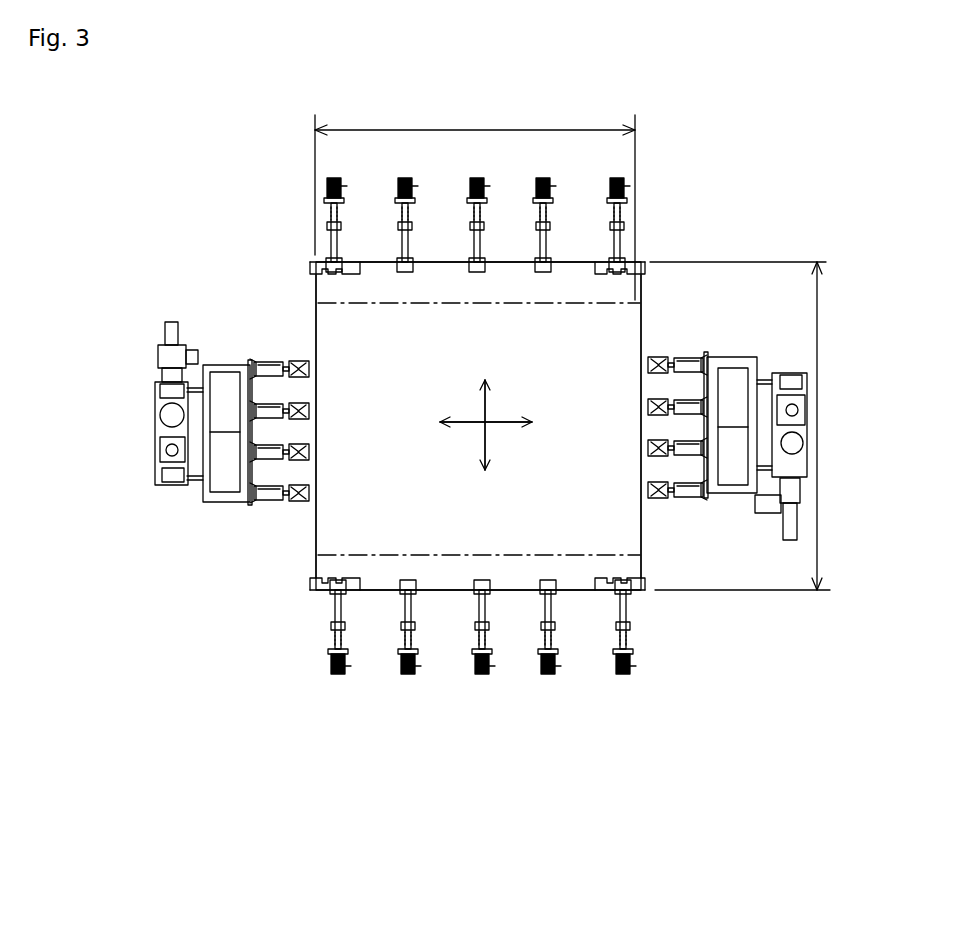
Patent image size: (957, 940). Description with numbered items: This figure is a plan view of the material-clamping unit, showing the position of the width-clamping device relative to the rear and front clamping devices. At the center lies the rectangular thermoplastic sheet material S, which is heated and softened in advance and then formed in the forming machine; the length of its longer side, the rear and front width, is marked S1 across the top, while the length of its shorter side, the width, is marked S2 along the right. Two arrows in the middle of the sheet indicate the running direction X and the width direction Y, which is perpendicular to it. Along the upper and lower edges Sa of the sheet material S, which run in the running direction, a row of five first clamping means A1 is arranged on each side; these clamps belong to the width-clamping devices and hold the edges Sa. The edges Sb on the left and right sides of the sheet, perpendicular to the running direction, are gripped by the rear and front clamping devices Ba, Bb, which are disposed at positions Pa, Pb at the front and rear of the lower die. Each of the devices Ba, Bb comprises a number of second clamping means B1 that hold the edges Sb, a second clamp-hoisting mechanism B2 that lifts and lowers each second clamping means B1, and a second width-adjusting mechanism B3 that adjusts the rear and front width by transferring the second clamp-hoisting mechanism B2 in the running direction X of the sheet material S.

The thermoplastic sheet material S is at (597, 502).
The edges of the sides of the sheet material Sa is at (568, 258).
The edges of the sides of the sheet material Sb is at (303, 281).
The length of the longer side S1 is at (475, 158).
The length of the shorter side S2 is at (817, 527).
The first clamping means A1 is at (385, 213).
The position Pa is at (727, 435).
The position Pb is at (200, 415).
The rear and front clamping device Ba is at (736, 513).
The rear and front clamping device Bb is at (207, 533).
The second clamping means B1 is at (275, 425).
The second clamp-hoisting mechanism B2 is at (185, 490).
The second width-adjusting mechanism B3 is at (157, 368).
The running direction X is at (463, 425).
The direction of the width Y is at (493, 445).